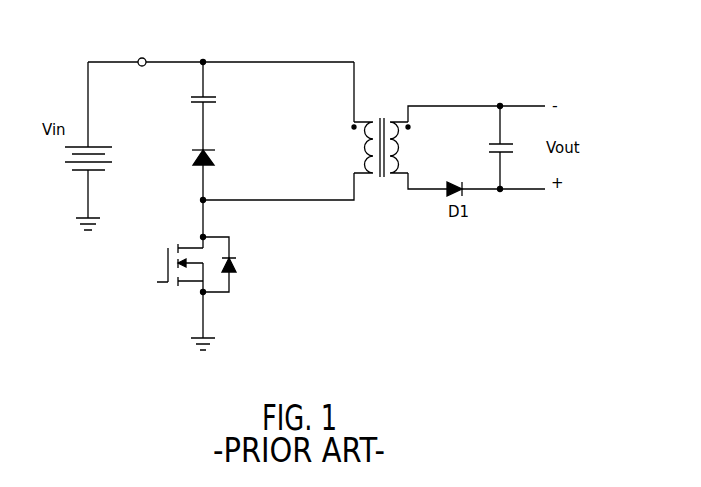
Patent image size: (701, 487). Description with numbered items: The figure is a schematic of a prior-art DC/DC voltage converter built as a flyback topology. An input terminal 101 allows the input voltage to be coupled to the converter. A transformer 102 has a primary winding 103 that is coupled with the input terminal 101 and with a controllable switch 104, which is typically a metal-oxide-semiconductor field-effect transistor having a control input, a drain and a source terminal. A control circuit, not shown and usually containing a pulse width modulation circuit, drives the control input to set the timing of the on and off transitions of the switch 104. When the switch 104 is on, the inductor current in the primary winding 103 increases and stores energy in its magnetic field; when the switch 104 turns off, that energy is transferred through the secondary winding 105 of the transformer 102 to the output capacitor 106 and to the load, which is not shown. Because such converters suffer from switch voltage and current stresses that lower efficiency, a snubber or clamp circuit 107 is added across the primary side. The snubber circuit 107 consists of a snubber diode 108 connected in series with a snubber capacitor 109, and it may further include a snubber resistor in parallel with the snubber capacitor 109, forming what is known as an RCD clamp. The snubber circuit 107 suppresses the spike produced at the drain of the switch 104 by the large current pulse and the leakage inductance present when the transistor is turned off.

The input terminal 101 is at (143, 57).
The transformer 102 is at (388, 138).
The primary winding 103 is at (371, 176).
The controllable switch 104 is at (190, 245).
The secondary winding 105 is at (398, 176).
The output capacitor 106 is at (506, 144).
The snubber circuit 107 is at (300, 128).
The snubber diode 108 is at (196, 163).
The snubber capacitor 109 is at (195, 100).